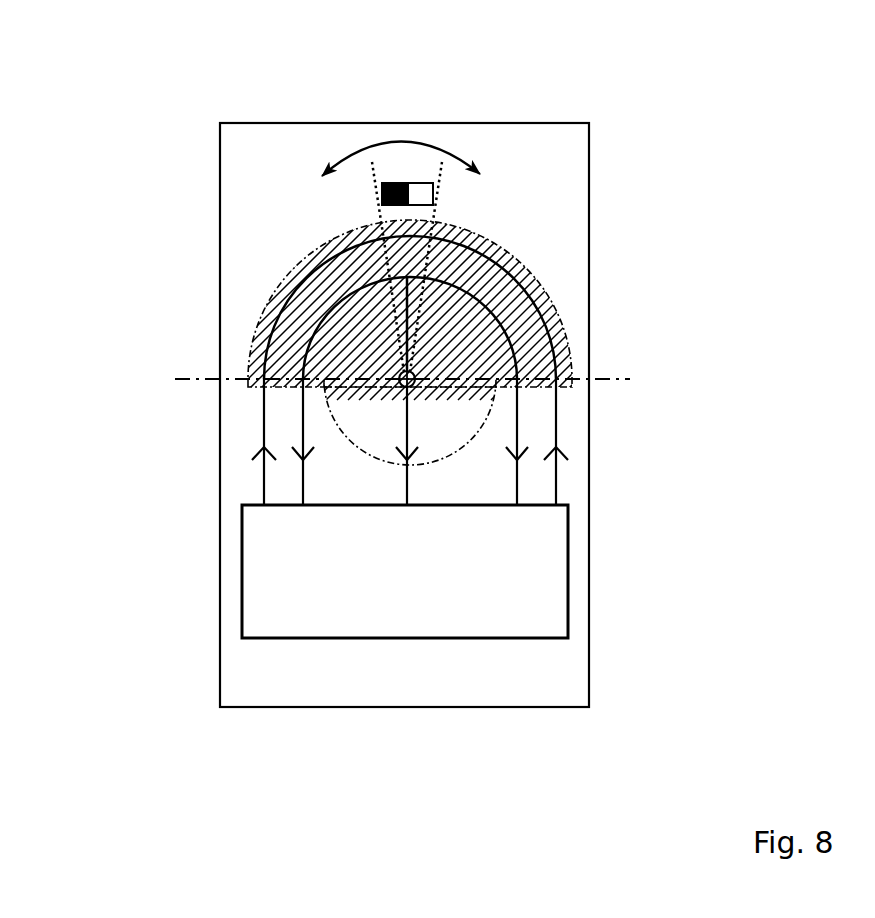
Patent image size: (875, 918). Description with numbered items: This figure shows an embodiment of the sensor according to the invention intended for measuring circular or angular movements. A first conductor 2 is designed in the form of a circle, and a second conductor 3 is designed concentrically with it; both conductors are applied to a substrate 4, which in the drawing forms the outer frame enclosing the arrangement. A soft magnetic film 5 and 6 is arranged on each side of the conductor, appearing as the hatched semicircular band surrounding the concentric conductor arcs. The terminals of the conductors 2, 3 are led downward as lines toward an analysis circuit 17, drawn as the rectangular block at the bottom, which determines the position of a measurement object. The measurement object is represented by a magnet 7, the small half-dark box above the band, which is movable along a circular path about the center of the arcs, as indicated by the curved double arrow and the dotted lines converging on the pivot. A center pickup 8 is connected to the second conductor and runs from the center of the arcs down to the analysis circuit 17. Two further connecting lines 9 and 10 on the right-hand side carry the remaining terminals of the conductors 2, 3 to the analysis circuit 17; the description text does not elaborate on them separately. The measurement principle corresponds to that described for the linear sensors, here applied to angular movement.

The first conductor 2 is at (275, 311).
The second conductor 3 is at (335, 298).
The substrate 4 is at (517, 675).
The soft magnetic film 5 is at (252, 338).
The soft magnetic film 6 is at (317, 436).
The magnet 7 is at (456, 199).
The center pickup 8 is at (411, 485).
The return line 9 is at (561, 432).
The supply line 10 is at (523, 476).
The analysis circuit 17 is at (297, 572).